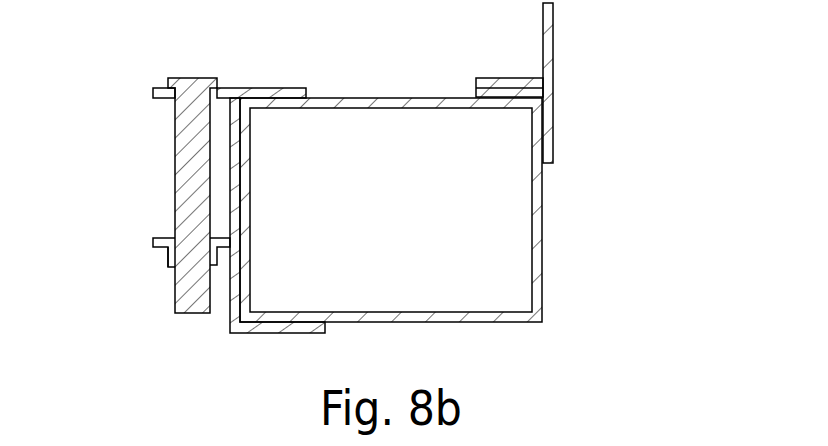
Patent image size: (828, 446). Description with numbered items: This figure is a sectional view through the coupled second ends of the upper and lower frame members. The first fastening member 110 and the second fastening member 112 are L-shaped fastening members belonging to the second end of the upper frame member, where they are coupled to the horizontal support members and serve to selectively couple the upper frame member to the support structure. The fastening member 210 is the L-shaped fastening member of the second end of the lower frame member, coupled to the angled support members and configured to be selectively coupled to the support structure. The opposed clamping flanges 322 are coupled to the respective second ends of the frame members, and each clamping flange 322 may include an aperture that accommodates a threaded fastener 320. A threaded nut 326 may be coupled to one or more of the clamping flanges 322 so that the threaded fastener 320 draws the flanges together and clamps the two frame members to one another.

The first fastening member 110 is at (550, 114).
The second fastening member 112 is at (264, 88).
The fastening member 210 is at (257, 333).
The threaded fastener 320 is at (175, 152).
The clamping flange 322 is at (163, 87).
The threaded nut 326 is at (128, 289).